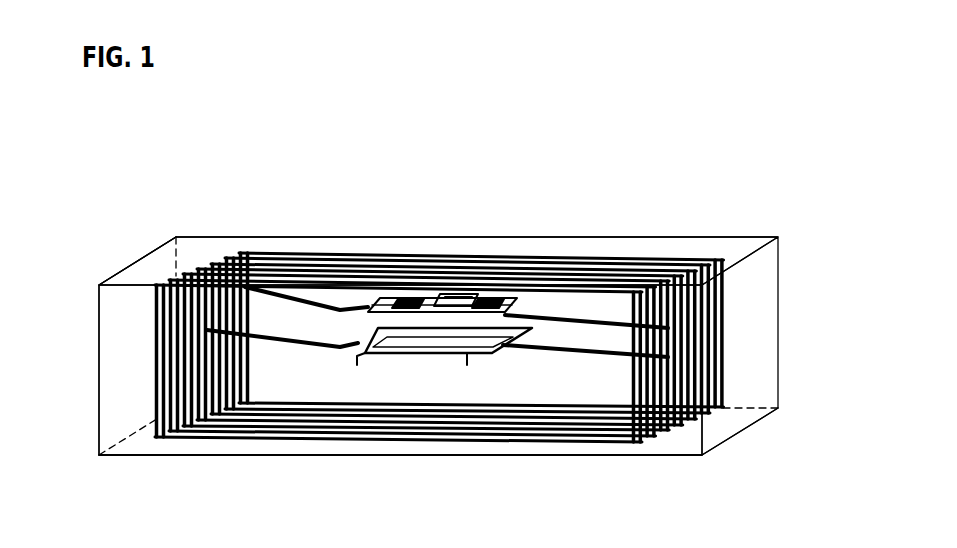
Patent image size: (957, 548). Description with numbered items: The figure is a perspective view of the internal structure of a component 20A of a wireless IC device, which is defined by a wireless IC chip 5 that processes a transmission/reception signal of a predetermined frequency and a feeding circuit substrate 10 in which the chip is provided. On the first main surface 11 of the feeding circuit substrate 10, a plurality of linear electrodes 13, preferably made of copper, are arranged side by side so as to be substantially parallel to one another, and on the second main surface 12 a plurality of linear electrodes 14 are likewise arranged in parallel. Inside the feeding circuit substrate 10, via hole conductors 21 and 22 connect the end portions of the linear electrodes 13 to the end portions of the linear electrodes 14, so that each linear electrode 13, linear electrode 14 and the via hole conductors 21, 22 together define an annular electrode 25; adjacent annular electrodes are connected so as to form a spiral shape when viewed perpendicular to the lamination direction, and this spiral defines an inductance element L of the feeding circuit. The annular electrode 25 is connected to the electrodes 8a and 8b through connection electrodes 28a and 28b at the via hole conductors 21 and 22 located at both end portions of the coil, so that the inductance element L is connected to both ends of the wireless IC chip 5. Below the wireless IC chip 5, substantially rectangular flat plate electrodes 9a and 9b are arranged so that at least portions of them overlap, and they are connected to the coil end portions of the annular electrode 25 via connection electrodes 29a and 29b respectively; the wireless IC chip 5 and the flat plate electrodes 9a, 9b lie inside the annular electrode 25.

The component of a wireless IC device 20A is at (729, 113).
The wireless IC chip 5 is at (467, 302).
The annular electrode 25 is at (390, 298).
The electrode 8a is at (410, 297).
The electrode 8b is at (498, 297).
The flat plate electrode 9a is at (358, 355).
The flat plate electrode 9b is at (467, 357).
The inductance element L is at (448, 363).
The connection electrode 28a is at (305, 298).
The connection electrode 28b is at (574, 279).
The connection electrode 29a is at (297, 347).
The connection electrode 29b is at (548, 352).
The via hole conductor 21 is at (153, 392).
The via hole conductor 22 is at (703, 333).
The feeding circuit substrate 10 is at (653, 236).
The first main surface 11 is at (732, 246).
The second main surface 12 is at (658, 456).
The linear electrode 13 is at (262, 257).
The linear electrode 14 is at (587, 443).